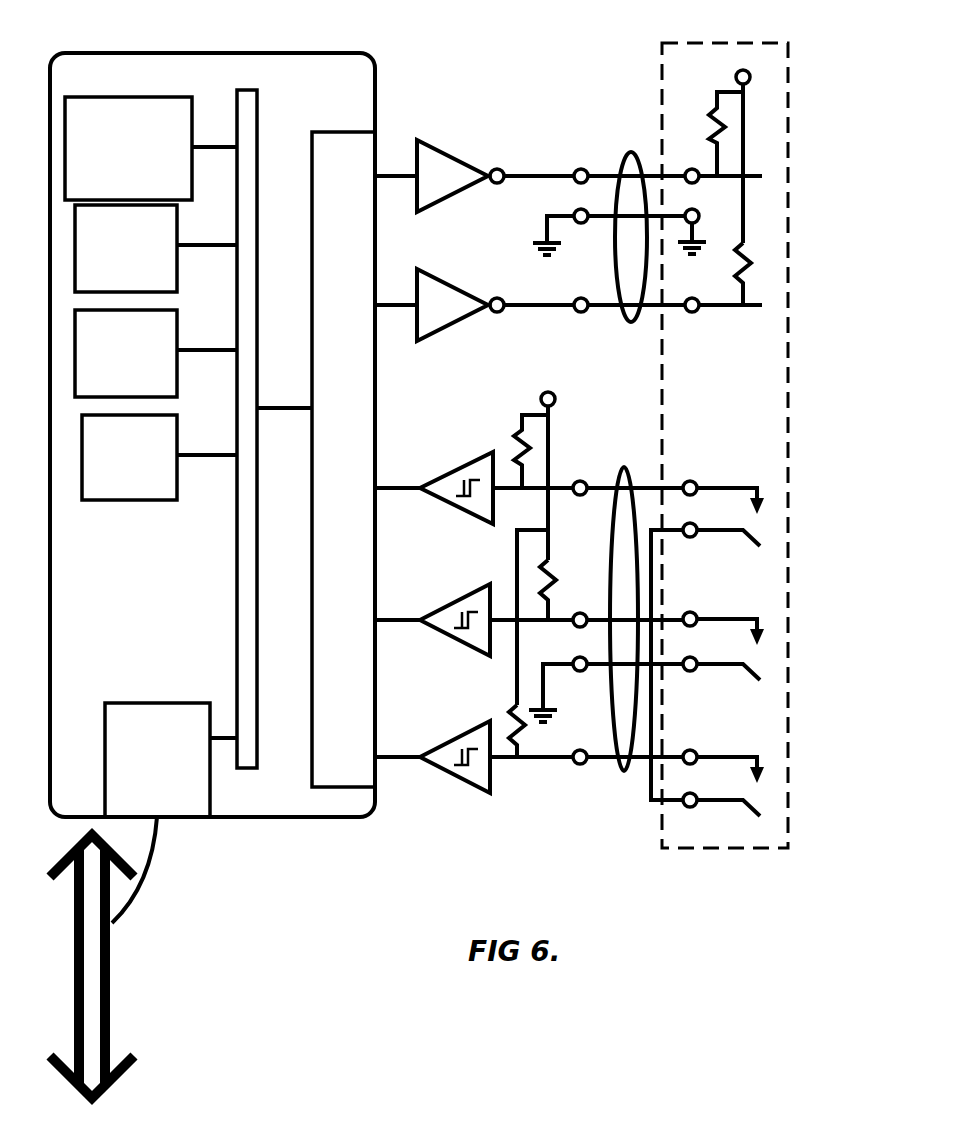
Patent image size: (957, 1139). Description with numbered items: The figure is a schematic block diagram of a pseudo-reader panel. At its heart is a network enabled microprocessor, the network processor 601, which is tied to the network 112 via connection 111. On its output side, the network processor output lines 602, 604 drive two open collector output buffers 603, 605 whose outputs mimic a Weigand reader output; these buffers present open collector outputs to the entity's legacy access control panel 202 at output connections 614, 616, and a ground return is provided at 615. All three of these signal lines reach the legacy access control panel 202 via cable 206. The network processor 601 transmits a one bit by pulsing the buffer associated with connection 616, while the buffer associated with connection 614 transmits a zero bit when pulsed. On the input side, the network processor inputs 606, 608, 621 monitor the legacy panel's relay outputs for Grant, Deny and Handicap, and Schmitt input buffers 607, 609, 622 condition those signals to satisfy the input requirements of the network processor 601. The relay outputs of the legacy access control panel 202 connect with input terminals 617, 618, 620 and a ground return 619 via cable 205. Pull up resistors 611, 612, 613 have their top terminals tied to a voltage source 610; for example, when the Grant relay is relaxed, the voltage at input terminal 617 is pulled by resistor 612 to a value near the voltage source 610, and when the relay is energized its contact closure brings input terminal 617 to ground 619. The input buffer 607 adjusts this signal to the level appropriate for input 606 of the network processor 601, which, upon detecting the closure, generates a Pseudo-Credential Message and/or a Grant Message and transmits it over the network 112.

The network processor 601 is at (204, 46).
The network processor output line 602 is at (395, 176).
The open collector output buffer 603 is at (448, 156).
The network processor output line 604 is at (395, 305).
The open collector output buffer 605 is at (448, 287).
The network processor input 606 is at (401, 488).
The input buffer 607 is at (472, 515).
The network processor input 608 is at (401, 620).
The input buffer 609 is at (472, 650).
The voltage source 610 is at (548, 392).
The pull up resistor 611 is at (510, 715).
The pull up resistor 612 is at (515, 445).
The pull up resistor 613 is at (580, 572).
The output connection 614 is at (581, 169).
The ground return 615 is at (581, 209).
The output connection 616 is at (581, 298).
The input terminal 617 is at (580, 481).
The input terminal 618 is at (581, 627).
The ground return 619 is at (581, 671).
The input terminal 620 is at (581, 764).
The network processor input 621 is at (401, 757).
The input buffer 622 is at (472, 787).
The legacy access control panel 202 is at (662, 117).
The cable 205 is at (640, 463).
The cable 206 is at (632, 322).
The connection 111 is at (158, 830).
The network 112 is at (110, 1007).